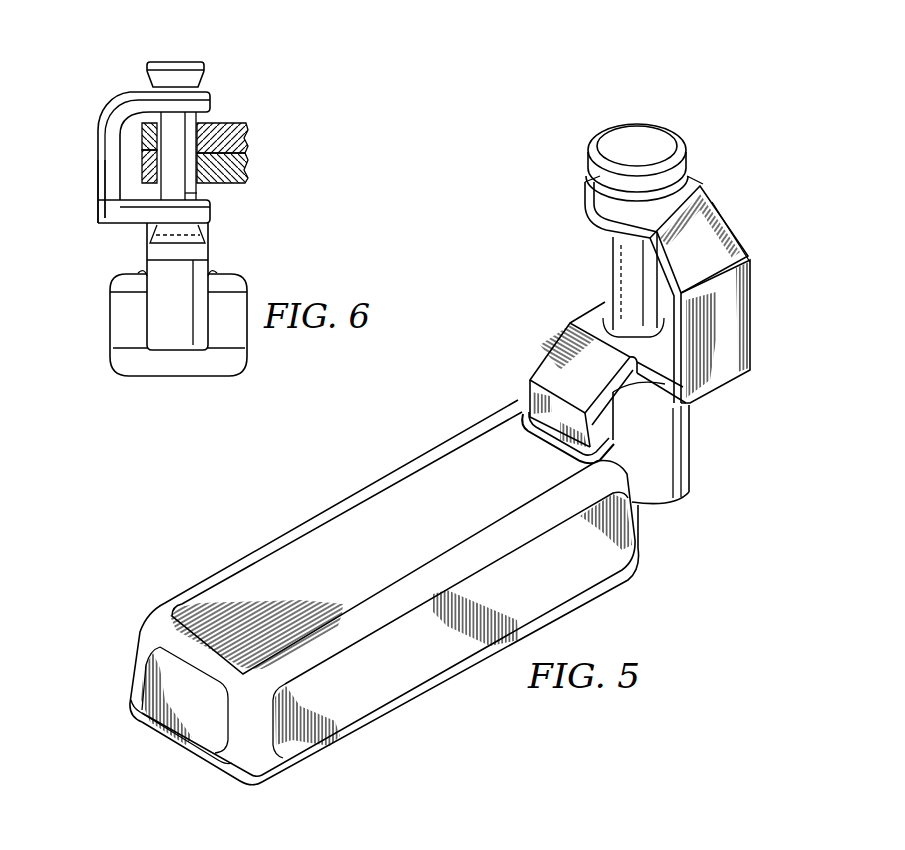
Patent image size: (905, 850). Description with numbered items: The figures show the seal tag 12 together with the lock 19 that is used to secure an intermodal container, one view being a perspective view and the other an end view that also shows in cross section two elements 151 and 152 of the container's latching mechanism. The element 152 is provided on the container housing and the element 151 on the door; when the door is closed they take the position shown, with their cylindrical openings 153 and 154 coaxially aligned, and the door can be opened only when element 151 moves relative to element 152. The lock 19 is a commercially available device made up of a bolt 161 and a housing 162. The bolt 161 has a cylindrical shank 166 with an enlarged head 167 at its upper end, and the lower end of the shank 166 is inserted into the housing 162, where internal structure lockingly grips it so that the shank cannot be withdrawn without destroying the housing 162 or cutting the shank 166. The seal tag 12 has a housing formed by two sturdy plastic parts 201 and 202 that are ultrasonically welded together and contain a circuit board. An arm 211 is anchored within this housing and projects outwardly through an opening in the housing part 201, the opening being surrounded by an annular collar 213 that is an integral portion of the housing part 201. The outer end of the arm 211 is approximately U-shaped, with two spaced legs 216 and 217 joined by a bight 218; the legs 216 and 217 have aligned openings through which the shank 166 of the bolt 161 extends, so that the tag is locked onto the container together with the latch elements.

In FIG. 6, the seal tag 12 is at (70, 143).
In FIG. 5, the seal tag 12 is at (688, 623).
In FIG. 6, the lock 19 is at (214, 58).
In FIG. 5, the lock 19 is at (689, 138).
In FIG. 6, the bolt 161 is at (161, 61).
In FIG. 5, the bolt 161 is at (636, 127).
In FIG. 6, the enlarged head 167 is at (148, 68).
In FIG. 5, the enlarged head 167 is at (591, 153).
In FIG. 6, the cylindrical opening 153 is at (170, 119).
In FIG. 6, the cylindrical shank 166 is at (172, 112).
In FIG. 5, the cylindrical shank 166 is at (618, 271).
In FIG. 6, the arm 211 is at (90, 213).
In FIG. 5, the arm 211 is at (733, 206).
In FIG. 6, the leg 216 is at (210, 100).
In FIG. 5, the leg 216 is at (592, 213).
In FIG. 6, the bight 218 is at (107, 184).
In FIG. 5, the bight 218 is at (735, 375).
In FIG. 6, the leg 217 is at (140, 213).
In FIG. 5, the leg 217 is at (588, 323).
In FIG. 6, the latch element 151 is at (246, 132).
In FIG. 6, the latch element 152 is at (240, 172).
In FIG. 6, the cylindrical opening 154 is at (190, 192).
In FIG. 6, the housing 162 is at (160, 312).
In FIG. 5, the housing 162 is at (660, 499).
In FIG. 6, the annular collar 213 is at (211, 280).
In FIG. 5, the annular collar 213 is at (526, 418).
In FIG. 6, the housing part 201 is at (118, 327).
In FIG. 5, the housing part 201 is at (297, 546).
In FIG. 6, the housing part 202 is at (238, 359).
In FIG. 5, the housing part 202 is at (416, 694).